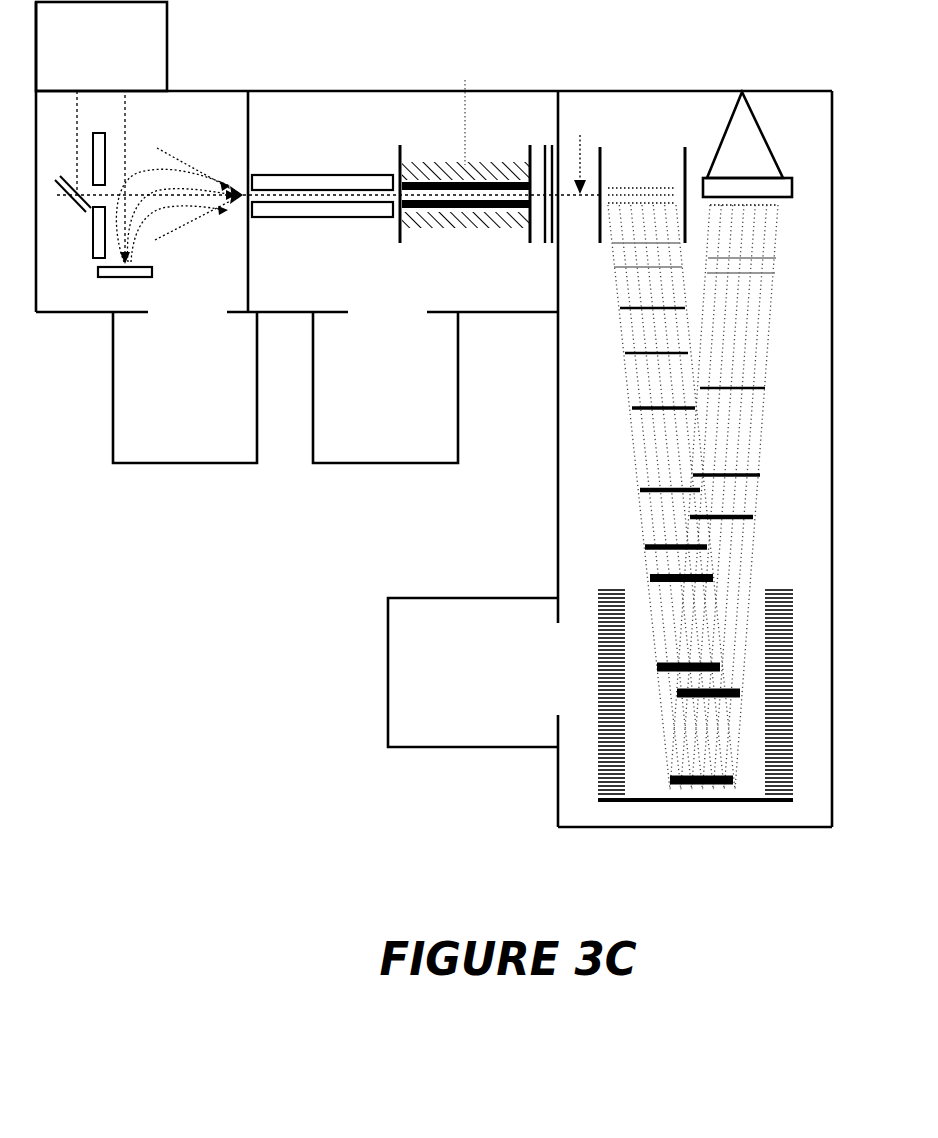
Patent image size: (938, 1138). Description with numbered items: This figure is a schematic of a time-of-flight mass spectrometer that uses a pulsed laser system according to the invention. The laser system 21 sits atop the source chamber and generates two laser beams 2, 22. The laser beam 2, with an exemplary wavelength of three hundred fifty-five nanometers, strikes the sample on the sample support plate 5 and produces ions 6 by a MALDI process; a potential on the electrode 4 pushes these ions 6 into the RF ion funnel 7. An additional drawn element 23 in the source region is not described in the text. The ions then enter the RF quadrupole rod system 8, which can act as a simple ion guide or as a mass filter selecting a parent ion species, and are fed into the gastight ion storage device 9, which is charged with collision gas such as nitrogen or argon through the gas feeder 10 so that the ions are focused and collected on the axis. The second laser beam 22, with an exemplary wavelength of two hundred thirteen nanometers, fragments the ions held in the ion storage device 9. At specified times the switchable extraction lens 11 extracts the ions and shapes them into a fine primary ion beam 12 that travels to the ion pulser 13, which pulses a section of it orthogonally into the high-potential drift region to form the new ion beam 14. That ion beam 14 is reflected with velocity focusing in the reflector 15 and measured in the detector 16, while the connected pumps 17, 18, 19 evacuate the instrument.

The laser beam 2 is at (133, 179).
The electrode 4 is at (91, 202).
The sample support plate 5 is at (125, 286).
The ions 6 is at (176, 215).
The RF ion funnel 7 is at (199, 192).
The RF quadrupole rod system 8 is at (322, 183).
The ion storage device 9 is at (465, 193).
The gas feeder 10 is at (483, 122).
The switchable extraction lens 11 is at (541, 210).
The primary ion beam 12 is at (582, 151).
The ion pulser 13 is at (642, 195).
The ion beam 14 is at (693, 497).
The reflector 15 is at (695, 694).
The detector 16 is at (747, 148).
The pump 17 is at (185, 387).
The pump 18 is at (385, 387).
The pump 19 is at (473, 672).
The laser system 21 is at (101, 46).
The laser beam 22 is at (61, 140).
The mirror 23 is at (69, 204).